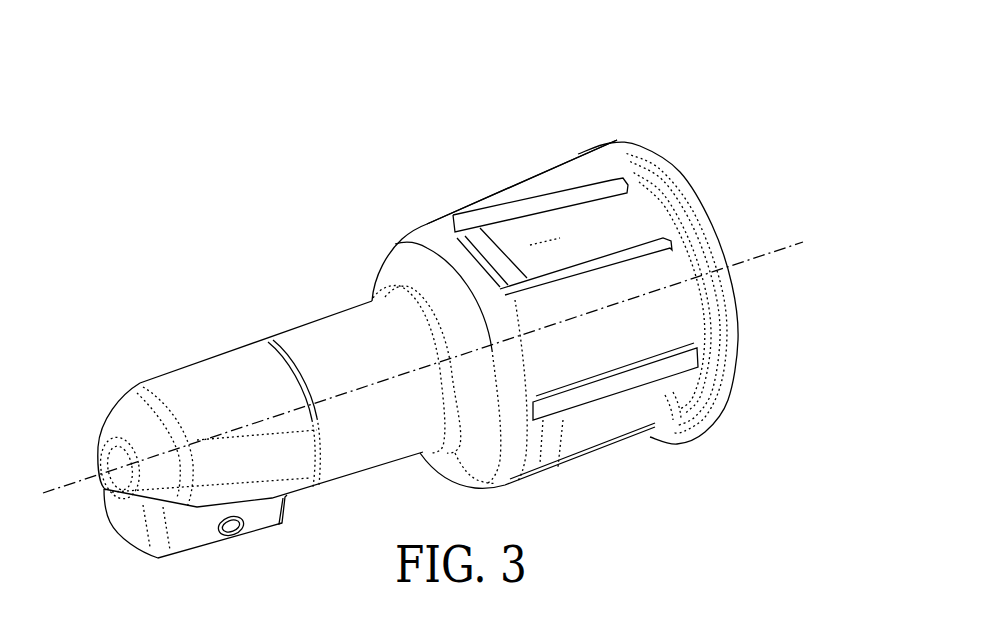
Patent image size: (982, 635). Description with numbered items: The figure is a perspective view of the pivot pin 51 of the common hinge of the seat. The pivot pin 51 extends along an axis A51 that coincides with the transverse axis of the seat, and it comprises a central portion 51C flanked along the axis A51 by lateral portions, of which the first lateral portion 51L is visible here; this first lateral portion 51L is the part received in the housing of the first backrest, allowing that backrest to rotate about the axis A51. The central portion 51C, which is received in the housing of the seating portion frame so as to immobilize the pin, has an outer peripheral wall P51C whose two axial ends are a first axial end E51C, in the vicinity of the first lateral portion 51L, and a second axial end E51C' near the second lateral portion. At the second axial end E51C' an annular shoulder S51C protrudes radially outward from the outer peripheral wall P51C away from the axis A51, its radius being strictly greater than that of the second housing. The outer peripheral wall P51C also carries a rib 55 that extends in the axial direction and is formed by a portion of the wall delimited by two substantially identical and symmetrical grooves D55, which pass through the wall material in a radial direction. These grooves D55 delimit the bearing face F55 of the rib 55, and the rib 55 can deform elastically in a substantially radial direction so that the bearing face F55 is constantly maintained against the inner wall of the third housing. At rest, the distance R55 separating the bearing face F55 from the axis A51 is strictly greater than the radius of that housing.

The pivot pin 51 is at (533, 118).
The first lateral portion 51L is at (303, 331).
The central portion 51C is at (468, 208).
The first axial end E51C is at (404, 322).
The second axial end E51C' is at (710, 293).
The annular shoulder S51C is at (703, 190).
The outer peripheral wall P51C is at (552, 177).
The grooves D55 is at (601, 179).
The bearing face F55 is at (528, 222).
The rib 55 is at (613, 221).
The distance R55 is at (550, 247).
The axis A51 is at (773, 253).